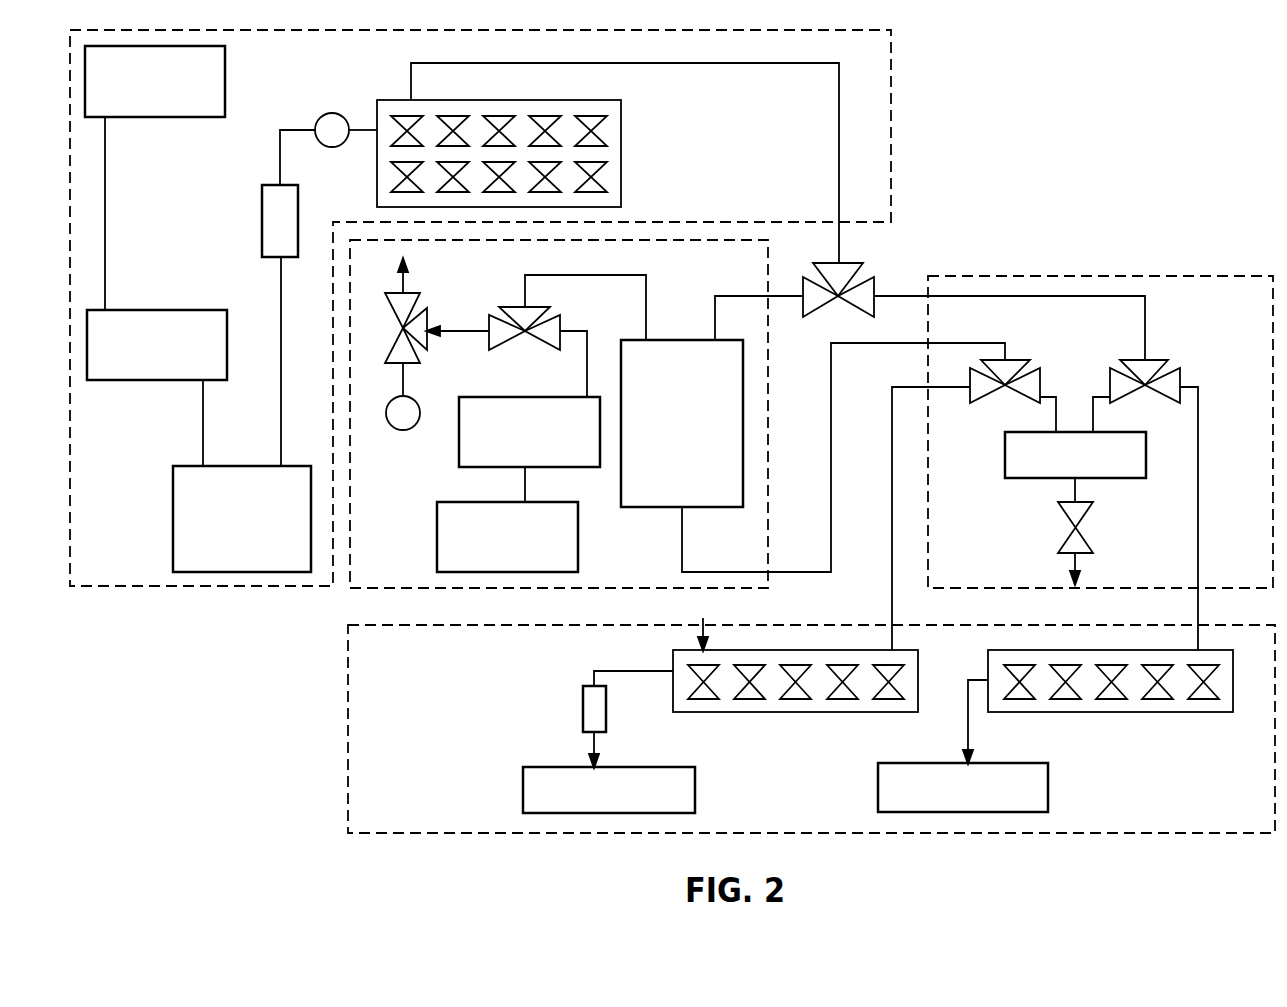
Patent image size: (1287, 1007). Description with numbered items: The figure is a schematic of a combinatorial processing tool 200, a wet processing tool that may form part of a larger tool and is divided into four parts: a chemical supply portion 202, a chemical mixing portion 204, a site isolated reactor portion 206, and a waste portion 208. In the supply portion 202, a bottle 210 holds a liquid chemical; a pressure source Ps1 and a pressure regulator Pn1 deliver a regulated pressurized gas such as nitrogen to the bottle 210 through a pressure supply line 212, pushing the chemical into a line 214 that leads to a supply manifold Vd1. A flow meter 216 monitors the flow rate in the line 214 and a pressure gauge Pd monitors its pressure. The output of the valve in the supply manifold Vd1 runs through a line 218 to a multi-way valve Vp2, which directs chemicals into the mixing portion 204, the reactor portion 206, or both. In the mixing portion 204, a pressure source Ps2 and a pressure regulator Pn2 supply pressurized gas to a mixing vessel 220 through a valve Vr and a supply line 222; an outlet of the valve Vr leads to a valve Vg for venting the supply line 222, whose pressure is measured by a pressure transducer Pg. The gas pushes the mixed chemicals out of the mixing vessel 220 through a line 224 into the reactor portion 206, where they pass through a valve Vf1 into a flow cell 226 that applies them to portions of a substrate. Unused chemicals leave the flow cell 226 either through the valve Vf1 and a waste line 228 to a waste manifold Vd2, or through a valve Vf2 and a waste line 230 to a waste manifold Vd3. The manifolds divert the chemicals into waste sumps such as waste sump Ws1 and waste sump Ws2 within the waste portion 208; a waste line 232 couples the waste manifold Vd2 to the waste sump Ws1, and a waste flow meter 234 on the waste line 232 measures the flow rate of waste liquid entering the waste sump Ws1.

The combinatorial processing tool 200 is at (1269, 102).
The chemical supply portion 202 is at (891, 112).
The chemical mixing portion 204 is at (350, 590).
The site isolated reactor portion 206 is at (1085, 276).
The waste portion 208 is at (348, 763).
The bottle 210 is at (173, 528).
The pressure supply line 212 is at (105, 185).
The line 214 is at (280, 135).
The flow meter 216 is at (262, 245).
The line 218 is at (575, 63).
The mixing vessel 220 is at (660, 507).
The supply line 222 is at (590, 275).
The line 224 is at (697, 570).
The flow cell 226 is at (1005, 455).
The waste line 228 is at (892, 483).
The waste line 230 is at (1198, 505).
The waste line 232 is at (604, 671).
The waste flow meter 234 is at (606, 697).
The pressure source Ps1 is at (200, 117).
The pressure gauge Pd is at (344, 143).
The pressure regulator Pn1 is at (150, 380).
The supply manifold Vd1 is at (621, 138).
The valve Vg is at (423, 302).
The valve Vr is at (549, 314).
The pressure transducer Pg is at (395, 428).
The pressure regulator Pn2 is at (459, 445).
The pressure source Ps2 is at (437, 548).
The valve Vp2 is at (864, 275).
The valve Vf1 is at (1036, 366).
The valve Vf2 is at (1176, 366).
The waste manifold Vd2 is at (780, 712).
The waste manifold Vd3 is at (1157, 712).
The waste sump Ws1 is at (695, 782).
The waste sump Ws2 is at (1048, 790).